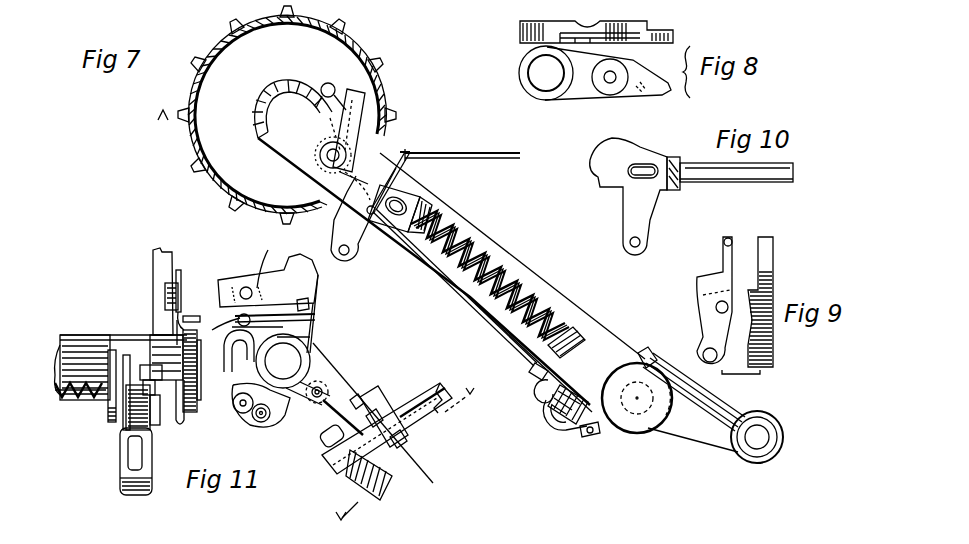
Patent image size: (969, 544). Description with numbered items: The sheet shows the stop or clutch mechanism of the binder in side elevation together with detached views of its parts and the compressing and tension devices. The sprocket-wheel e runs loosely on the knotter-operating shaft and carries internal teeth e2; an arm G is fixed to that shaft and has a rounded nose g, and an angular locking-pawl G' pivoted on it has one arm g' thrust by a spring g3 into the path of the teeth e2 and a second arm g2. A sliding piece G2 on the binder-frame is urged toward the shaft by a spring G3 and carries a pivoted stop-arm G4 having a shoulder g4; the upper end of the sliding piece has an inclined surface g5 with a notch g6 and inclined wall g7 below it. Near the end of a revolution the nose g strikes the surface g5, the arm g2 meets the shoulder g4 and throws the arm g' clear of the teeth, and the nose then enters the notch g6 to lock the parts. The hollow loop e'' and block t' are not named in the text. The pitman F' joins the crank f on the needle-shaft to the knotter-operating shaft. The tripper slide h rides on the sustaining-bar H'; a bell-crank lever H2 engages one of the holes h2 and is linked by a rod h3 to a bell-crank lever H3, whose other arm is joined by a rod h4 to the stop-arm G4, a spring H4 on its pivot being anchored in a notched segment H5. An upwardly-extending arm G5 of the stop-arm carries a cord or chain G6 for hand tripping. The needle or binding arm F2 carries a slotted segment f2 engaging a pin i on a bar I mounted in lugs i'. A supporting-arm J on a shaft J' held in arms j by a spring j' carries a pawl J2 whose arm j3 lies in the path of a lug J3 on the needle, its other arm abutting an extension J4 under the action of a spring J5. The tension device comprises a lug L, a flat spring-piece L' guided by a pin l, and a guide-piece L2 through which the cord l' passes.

In FIG. 7, the sprocket-wheel e is at (286, 114).
In FIG. 7, the internal teeth e2 is at (287, 115).
In FIG. 7, the curved guide loop e'' is at (292, 109).
In FIG. 7, the arm of locking-pawl g' is at (374, 125).
In FIG. 7, the angular locking-pawl G' is at (384, 140).
In FIG. 7, the spring g3 is at (329, 86).
In FIG. 7, the arm of locking-pawl g2 is at (398, 160).
In FIG. 7, the cord or chain G6 is at (462, 147).
In FIG. 7, the sliding piece G2 is at (412, 200).
In FIG. 10, the sliding piece G2 is at (660, 200).
In FIG. 7, the spring G3 is at (482, 268).
In FIG. 7, the shoulder g4 is at (345, 177).
In FIG. 9, the shoulder g4 is at (707, 277).
In FIG. 7, the rounded point or nose g is at (360, 189).
In FIG. 8, the rounded point or nose g is at (628, 48).
In FIG. 7, the stop-arm G4 is at (360, 236).
In FIG. 9, the stop-arm G4 is at (708, 300).
In FIG. 7, the rod h4 is at (514, 354).
In FIG. 7, the notched segment H5 is at (534, 382).
In FIG. 7, the spring H4 is at (576, 392).
In FIG. 7, the bell-crank lever H3 is at (558, 432).
In FIG. 7, the rod h3 is at (587, 438).
In FIG. 7, the pitman F' is at (710, 401).
In FIG. 7, the crank f is at (642, 398).
In FIG. 7, the pin l is at (268, 271).
In FIG. 7, the cord l' is at (265, 264).
In FIG. 11, the cord l' is at (169, 234).
In FIG. 7, the needle or binding arm F2 is at (309, 302).
In FIG. 11, the needle or binding arm F2 is at (153, 256).
In FIG. 7, the guide-piece L2 is at (262, 322).
In FIG. 7, the supporting-arm J is at (293, 387).
In FIG. 7, the arm of pawl j3 is at (233, 363).
In FIG. 7, the pawl J2 is at (270, 422).
In FIG. 7, the extension of shaft J4 is at (238, 412).
In FIG. 7, the spring J5 is at (258, 422).
In FIG. 7, the lug or projection J3 is at (262, 372).
In FIG. 11, the lug or projection J3 is at (145, 368).
In FIG. 7, the slotted segment f2 is at (240, 352).
In FIG. 7, the slide h is at (334, 408).
In FIG. 7, the sustaining-bar H' is at (352, 409).
In FIG. 7, the bell-crank lever H2 is at (390, 417).
In FIG. 7, the series of holes h2 is at (383, 419).
In FIG. 7, the hatched block t' is at (352, 485).
In FIG. 8, the arm G is at (584, 50).
In FIG. 10, the inclined surface g5 is at (600, 148).
In FIG. 10, the notch or recess g6 is at (608, 172).
In FIG. 10, the inclined wall g7 is at (600, 160).
In FIG. 9, the upwardly-extending arm G5 is at (736, 232).
In FIG. 11, the arms j is at (154, 371).
In FIG. 11, the pin i is at (186, 402).
In FIG. 11, the spring j' is at (80, 415).
In FIG. 11, the shaft J' is at (93, 427).
In FIG. 11, the bar I is at (130, 460).
In FIG. 11, the lugs i' is at (159, 479).
In FIG. 11, the lug L is at (138, 285).
In FIG. 11, the flat spring-piece L' is at (188, 293).